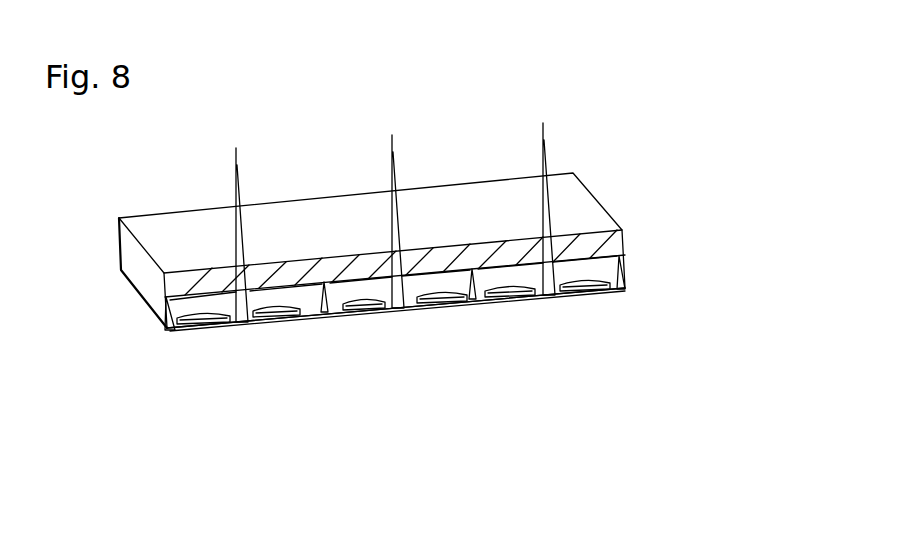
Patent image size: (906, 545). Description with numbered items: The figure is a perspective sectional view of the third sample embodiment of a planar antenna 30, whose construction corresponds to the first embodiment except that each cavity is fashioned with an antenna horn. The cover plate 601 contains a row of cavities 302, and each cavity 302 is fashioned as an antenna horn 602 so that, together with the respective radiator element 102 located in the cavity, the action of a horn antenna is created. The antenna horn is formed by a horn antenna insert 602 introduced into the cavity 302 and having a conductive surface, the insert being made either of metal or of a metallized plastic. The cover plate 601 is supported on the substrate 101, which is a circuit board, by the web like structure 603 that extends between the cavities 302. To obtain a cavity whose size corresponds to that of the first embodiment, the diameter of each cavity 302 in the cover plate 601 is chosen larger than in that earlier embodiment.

The planar antenna 30 is at (460, 165).
The cover plate 601 is at (602, 247).
The antenna horn 602 is at (386, 208).
The web like structure 603 is at (160, 317).
The cavity 302 is at (197, 303).
The radiator element 102 is at (272, 320).
The substrate 101 is at (172, 328).